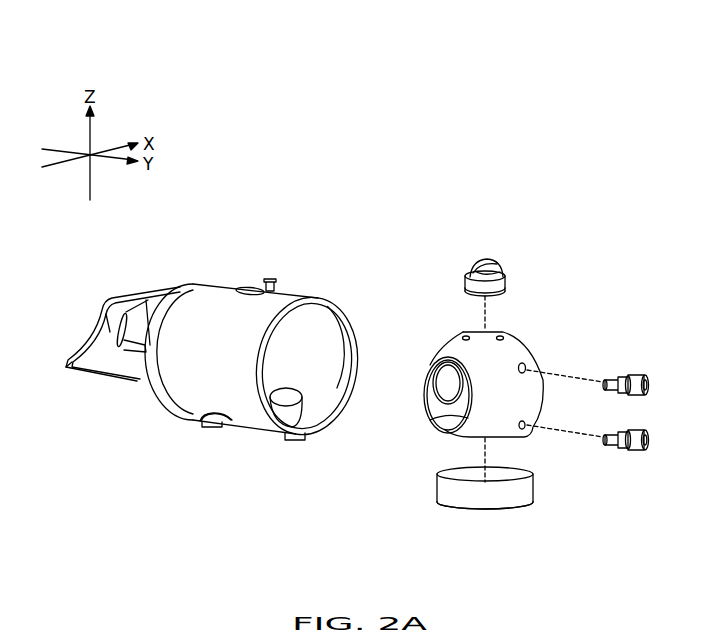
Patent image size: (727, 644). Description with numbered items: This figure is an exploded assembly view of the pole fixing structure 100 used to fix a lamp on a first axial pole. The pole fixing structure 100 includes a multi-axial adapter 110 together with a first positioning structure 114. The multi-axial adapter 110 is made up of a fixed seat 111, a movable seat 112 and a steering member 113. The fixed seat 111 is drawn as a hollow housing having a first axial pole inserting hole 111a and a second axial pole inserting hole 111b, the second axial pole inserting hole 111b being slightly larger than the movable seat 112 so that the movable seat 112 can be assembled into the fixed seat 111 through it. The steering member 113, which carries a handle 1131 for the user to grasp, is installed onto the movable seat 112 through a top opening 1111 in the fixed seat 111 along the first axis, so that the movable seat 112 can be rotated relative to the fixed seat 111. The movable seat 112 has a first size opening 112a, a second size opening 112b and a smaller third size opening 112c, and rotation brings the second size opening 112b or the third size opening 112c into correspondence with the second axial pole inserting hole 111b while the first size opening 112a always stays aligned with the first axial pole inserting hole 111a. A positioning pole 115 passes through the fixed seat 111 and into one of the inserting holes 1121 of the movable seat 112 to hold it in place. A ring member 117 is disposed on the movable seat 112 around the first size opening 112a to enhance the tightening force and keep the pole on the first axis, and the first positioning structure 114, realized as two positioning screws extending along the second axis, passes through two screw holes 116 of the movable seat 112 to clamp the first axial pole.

The pole fixing structure 100 is at (76, 246).
The multi-axial adapter 110 is at (44, 413).
The fixed seat 111 is at (226, 290).
The top opening 1111 is at (262, 275).
The positioning pole 115 is at (276, 286).
The first axial pole inserting hole 111a is at (238, 432).
The second axial pole inserting hole 111b is at (335, 386).
The movable seat 112 is at (515, 350).
The first size opening 112a is at (478, 516).
The second size opening 112b is at (430, 412).
The third size opening 112c is at (444, 372).
The inserting holes 1121 is at (503, 333).
The steering member 113 is at (485, 262).
The handle 1131 is at (467, 260).
The first positioning structure 114 is at (625, 372).
The screw holes 116 is at (527, 368).
The ring member 117 is at (523, 502).